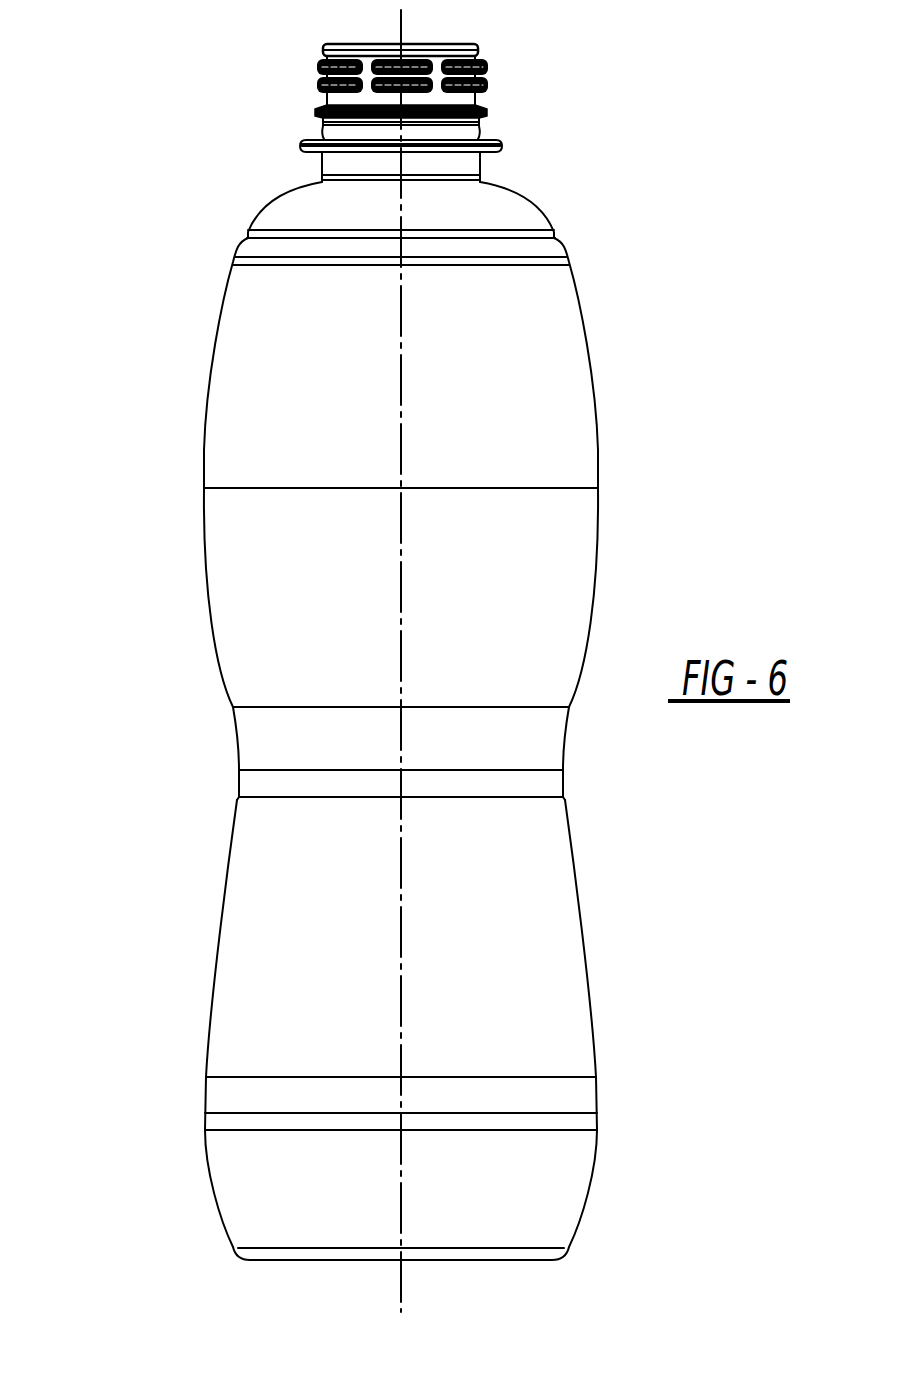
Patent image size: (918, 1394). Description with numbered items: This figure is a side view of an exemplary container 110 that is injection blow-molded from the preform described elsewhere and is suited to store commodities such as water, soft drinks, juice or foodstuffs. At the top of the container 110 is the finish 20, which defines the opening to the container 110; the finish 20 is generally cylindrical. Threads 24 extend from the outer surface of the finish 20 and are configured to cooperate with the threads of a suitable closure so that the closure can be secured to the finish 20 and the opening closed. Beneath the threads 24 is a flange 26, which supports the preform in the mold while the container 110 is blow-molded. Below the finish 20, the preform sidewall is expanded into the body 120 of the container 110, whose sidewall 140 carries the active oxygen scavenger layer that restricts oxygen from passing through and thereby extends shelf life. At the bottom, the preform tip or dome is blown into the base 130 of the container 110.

The container 110 is at (155, 118).
The finish 20 is at (480, 50).
The threads 24 is at (483, 62).
The flange 26 is at (503, 145).
The body 120 is at (280, 542).
The sidewall 140 is at (207, 603).
The base 130 is at (325, 1260).